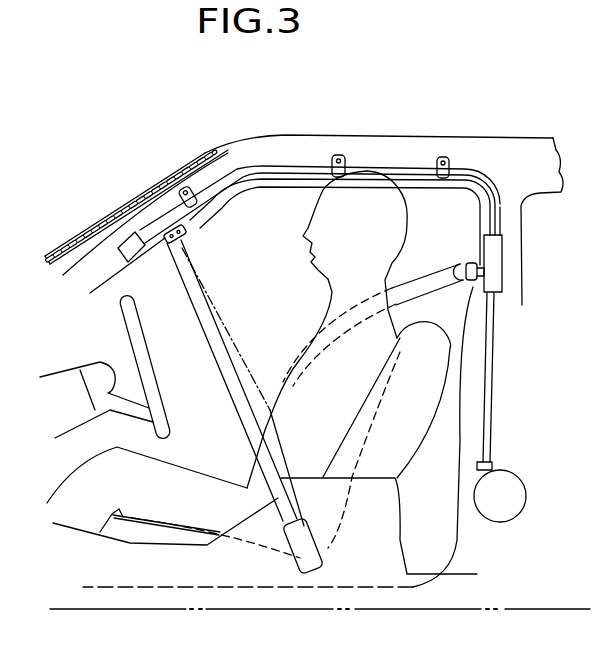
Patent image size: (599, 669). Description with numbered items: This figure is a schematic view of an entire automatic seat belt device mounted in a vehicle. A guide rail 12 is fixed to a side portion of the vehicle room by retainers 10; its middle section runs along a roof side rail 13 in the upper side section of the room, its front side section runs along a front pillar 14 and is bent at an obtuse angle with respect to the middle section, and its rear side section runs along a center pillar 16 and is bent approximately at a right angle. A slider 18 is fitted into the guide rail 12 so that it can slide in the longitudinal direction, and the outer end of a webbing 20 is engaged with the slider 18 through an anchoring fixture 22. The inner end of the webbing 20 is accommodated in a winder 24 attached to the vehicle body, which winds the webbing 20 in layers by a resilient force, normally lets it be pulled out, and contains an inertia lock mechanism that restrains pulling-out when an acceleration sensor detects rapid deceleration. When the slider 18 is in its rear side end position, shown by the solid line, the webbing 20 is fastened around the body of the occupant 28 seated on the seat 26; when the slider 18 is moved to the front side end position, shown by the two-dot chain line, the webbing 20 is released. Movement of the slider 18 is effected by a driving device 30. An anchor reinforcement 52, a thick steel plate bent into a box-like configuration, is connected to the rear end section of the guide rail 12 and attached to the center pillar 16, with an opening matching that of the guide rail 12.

The retainers 10 is at (343, 153).
The guide rail 12 is at (405, 155).
The roof side rail 13 is at (428, 157).
The front pillar 14 is at (147, 218).
The center pillar 16 is at (510, 257).
The slider 18 is at (157, 182).
The webbing 20 is at (230, 343).
The anchoring fixture 22 is at (462, 292).
The winder 24 is at (310, 547).
The seat 26 is at (390, 443).
The occupant 28 is at (363, 190).
The driving device 30 is at (507, 493).
The anchor reinforcement 52 is at (502, 277).